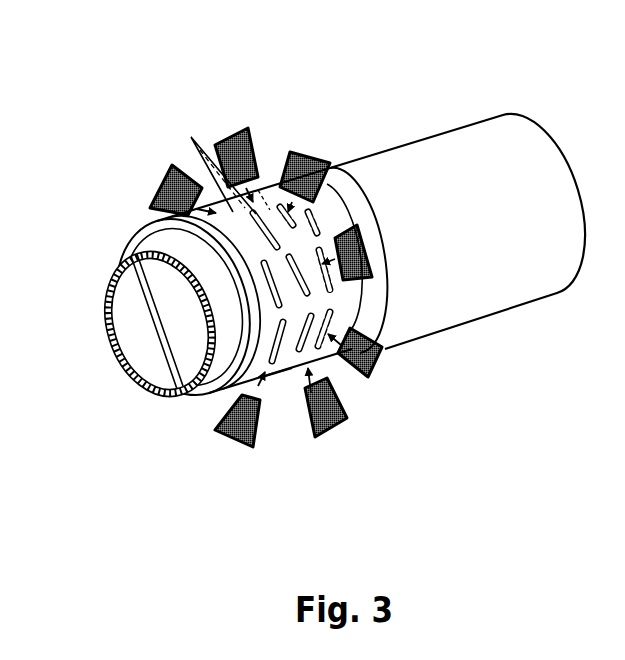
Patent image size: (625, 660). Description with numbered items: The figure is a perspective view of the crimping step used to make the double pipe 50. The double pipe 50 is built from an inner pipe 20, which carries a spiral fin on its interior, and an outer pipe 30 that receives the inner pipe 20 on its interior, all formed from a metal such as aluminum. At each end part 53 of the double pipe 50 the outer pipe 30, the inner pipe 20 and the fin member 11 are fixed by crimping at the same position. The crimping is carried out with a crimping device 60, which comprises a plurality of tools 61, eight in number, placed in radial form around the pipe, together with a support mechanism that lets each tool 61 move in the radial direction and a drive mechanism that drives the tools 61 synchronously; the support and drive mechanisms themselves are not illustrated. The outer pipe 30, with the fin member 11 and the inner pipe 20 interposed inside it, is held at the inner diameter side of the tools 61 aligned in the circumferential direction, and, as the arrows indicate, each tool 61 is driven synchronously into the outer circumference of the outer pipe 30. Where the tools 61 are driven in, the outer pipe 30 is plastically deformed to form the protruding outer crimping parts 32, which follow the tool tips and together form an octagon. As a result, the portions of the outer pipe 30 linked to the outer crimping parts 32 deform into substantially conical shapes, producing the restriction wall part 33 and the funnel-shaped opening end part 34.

The fin member 11 is at (176, 330).
The inner pipe 20 is at (152, 247).
The outer pipe 30 is at (432, 138).
The outer crimping part 32 is at (191, 138).
The restriction wall part 33 is at (353, 317).
The opening end part 34 is at (233, 393).
The double pipe 50 is at (457, 119).
The end part 53 is at (277, 371).
The crimping device 60 is at (310, 143).
The tool 61 is at (251, 150).